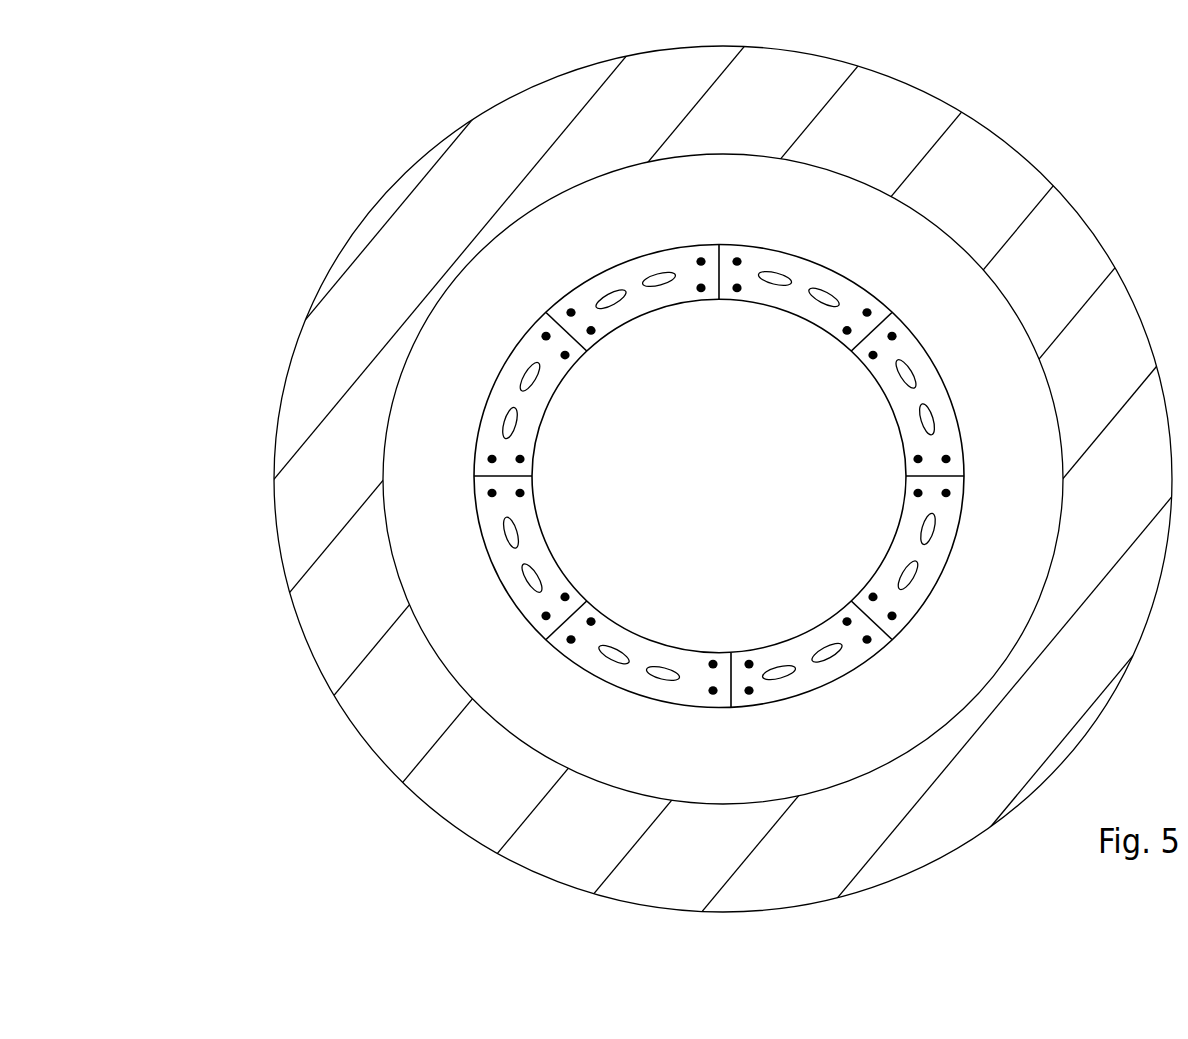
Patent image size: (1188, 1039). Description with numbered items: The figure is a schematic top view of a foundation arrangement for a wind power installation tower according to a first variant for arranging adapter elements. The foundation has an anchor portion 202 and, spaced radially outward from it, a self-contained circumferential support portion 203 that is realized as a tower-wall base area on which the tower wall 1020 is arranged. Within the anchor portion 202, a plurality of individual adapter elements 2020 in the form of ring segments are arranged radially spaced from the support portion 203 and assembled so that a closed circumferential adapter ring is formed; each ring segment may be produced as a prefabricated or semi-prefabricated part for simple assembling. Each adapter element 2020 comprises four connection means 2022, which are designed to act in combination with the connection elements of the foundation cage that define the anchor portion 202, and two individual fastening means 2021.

The tower wall 1020 is at (539, 821).
The support portion 203 is at (407, 721).
The anchor portion 202 is at (489, 566).
The adapter element 2020 is at (618, 277).
The fastening means 2021 is at (522, 387).
The connection means 2022 is at (573, 307).